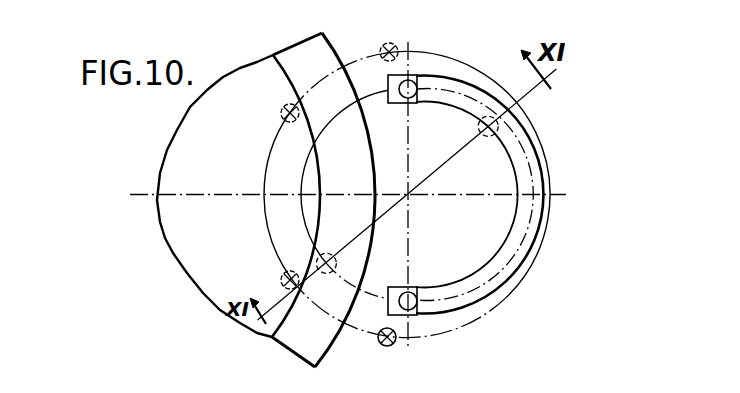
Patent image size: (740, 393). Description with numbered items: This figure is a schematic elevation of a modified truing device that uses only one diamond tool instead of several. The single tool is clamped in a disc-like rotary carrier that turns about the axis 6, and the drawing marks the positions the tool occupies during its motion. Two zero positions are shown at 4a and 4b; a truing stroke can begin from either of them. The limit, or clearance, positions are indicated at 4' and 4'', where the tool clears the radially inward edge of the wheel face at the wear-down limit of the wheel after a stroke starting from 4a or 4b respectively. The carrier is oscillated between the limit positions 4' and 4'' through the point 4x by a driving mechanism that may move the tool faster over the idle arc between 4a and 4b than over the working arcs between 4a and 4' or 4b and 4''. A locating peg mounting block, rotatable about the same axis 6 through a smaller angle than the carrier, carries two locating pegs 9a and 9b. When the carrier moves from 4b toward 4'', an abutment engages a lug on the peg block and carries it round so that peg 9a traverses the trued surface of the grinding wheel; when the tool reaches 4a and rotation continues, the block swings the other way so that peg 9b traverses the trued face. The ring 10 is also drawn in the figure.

The zero position 4a is at (397, 49).
The zero position 4b is at (392, 345).
The clearance position 4' is at (269, 121).
The clearance position 4'' is at (268, 269).
The point 4x is at (549, 194).
The axis 6 is at (408, 195).
The locating peg 9a is at (337, 264).
The locating peg 9b is at (477, 129).
The ring 10 is at (518, 165).